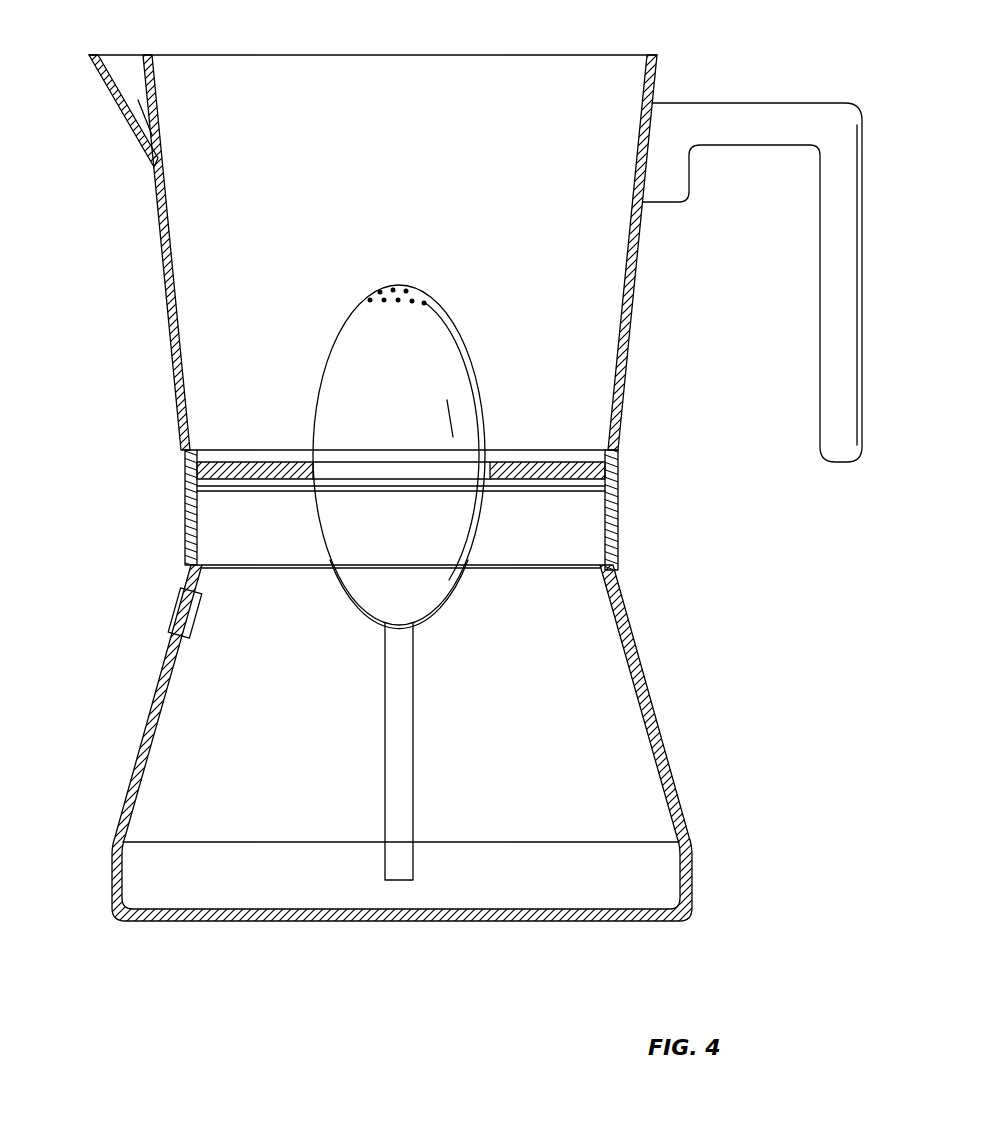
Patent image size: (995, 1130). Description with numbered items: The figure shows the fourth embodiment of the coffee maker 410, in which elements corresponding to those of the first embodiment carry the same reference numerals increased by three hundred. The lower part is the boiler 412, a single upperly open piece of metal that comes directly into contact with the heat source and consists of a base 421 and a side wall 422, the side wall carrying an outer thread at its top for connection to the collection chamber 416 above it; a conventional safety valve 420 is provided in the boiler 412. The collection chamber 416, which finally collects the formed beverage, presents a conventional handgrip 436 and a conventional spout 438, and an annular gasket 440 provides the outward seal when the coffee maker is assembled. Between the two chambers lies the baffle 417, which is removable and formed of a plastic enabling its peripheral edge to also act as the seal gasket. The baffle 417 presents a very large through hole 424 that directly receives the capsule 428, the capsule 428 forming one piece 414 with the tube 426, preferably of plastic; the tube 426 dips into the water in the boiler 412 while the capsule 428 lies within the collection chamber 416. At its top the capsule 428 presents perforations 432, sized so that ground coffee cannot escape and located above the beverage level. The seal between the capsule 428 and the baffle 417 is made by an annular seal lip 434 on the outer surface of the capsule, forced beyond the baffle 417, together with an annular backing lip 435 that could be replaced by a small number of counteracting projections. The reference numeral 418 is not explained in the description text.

The coffee maker 410 is at (136, 475).
The boiler 412 is at (682, 780).
The one piece 414 is at (470, 353).
The collection chamber 416 is at (160, 303).
The baffle 417 is at (268, 482).
The upper vessel right wall 418 is at (632, 316).
The safety valve 420 is at (162, 616).
The base 421 is at (582, 920).
The side wall 422 is at (133, 770).
The through hole 424 is at (315, 470).
The tube 426 is at (413, 776).
The capsule 428 is at (455, 585).
The perforations 432 is at (420, 302).
The annular seal lip 434 is at (493, 490).
The annular backing lip 435 is at (498, 457).
The handgrip 436 is at (818, 315).
The spout 438 is at (126, 104).
The annular gasket 440 is at (212, 460).